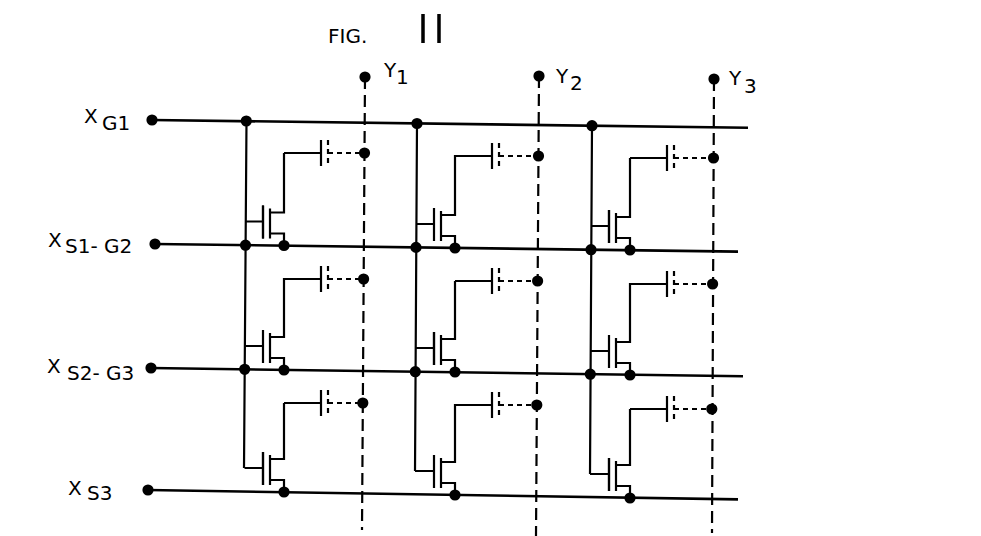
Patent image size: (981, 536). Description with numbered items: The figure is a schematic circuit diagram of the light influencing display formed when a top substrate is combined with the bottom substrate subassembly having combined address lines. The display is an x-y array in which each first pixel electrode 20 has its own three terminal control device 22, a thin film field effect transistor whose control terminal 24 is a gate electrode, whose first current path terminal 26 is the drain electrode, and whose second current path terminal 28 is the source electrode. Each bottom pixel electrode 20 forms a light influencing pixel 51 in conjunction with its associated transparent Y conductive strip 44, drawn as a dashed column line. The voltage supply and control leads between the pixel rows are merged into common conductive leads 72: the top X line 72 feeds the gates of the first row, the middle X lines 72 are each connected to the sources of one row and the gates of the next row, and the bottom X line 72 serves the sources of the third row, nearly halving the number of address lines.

The first pixel electrode 20 is at (320, 148).
The three terminal control device 22 is at (237, 216).
The control terminal 24 is at (262, 230).
The first current path terminal 26 is at (284, 212).
The second current path terminal 28 is at (280, 230).
The transparent Y conductive strip 44 is at (366, 98).
The light influencing pixel 51 is at (328, 167).
The common conductive lead 72 is at (184, 120).